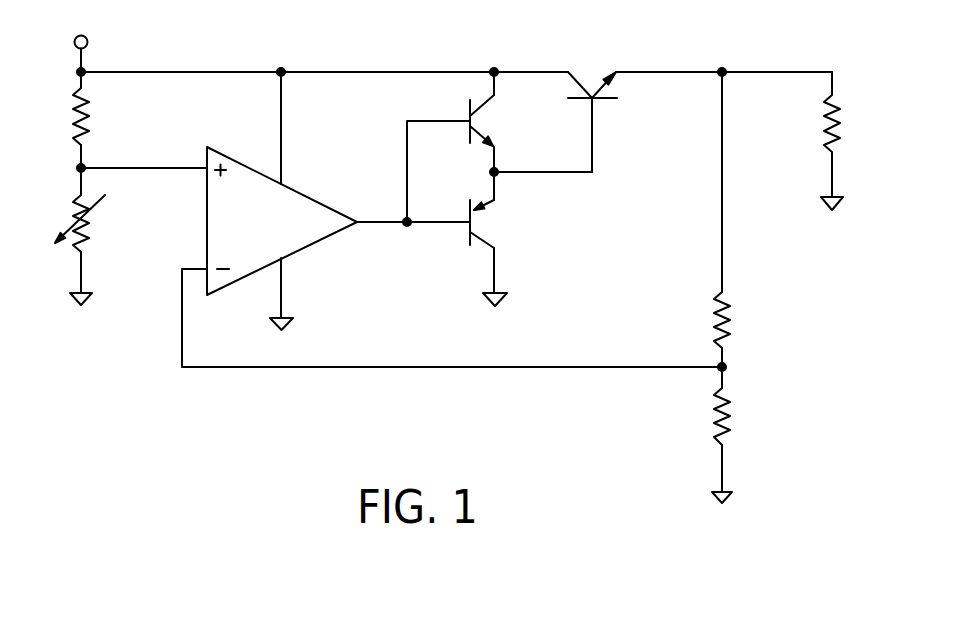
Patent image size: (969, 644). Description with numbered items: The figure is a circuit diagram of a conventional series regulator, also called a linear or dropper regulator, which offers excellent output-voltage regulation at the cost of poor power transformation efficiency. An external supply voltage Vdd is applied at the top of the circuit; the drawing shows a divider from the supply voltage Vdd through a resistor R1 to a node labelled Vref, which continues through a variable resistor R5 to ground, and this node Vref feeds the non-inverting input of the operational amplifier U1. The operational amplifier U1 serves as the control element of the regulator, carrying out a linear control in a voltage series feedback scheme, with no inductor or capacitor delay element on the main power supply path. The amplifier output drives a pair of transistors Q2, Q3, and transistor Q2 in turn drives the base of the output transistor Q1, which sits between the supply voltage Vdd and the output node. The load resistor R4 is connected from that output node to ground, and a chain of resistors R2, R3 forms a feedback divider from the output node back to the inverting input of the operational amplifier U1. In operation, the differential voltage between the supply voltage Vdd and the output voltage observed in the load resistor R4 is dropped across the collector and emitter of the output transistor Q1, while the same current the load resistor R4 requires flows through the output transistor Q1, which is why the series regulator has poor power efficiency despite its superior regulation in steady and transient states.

The external supply voltage Vdd is at (80, 37).
The reference voltage node Vref is at (55, 170).
The resistor R1 is at (97, 108).
The variable resistor R5 is at (88, 250).
The operational amplifier U1 is at (282, 238).
The output transistor Q1 is at (592, 107).
The transistor Q2 is at (466, 147).
The transistor Q3 is at (497, 239).
The resistor R2 is at (738, 320).
The resistor R3 is at (737, 445).
The load resistor R4 is at (848, 141).